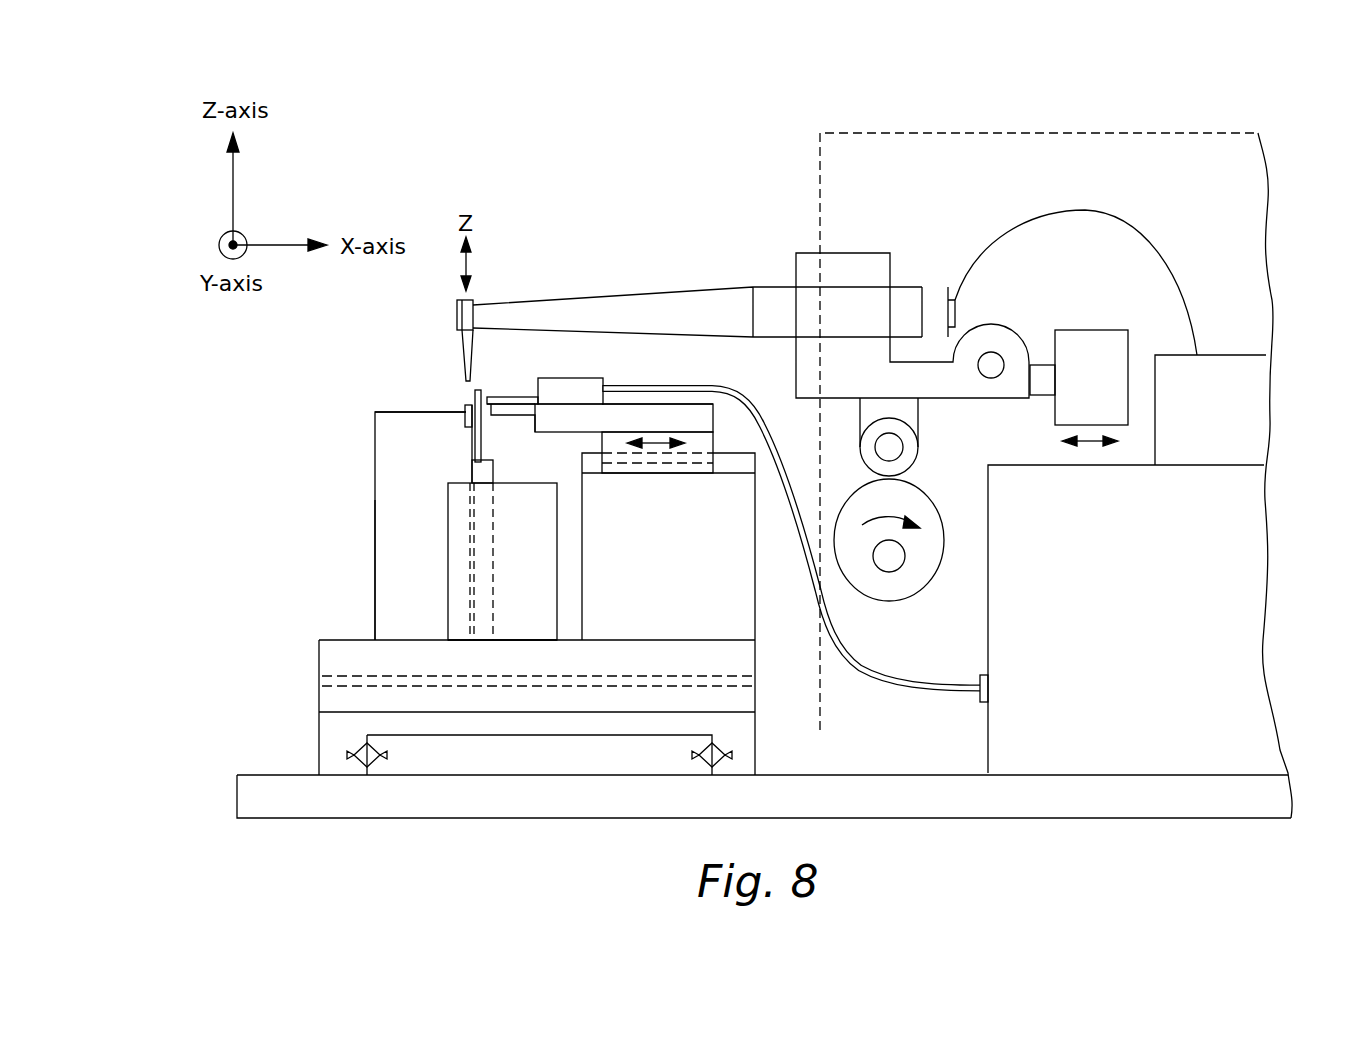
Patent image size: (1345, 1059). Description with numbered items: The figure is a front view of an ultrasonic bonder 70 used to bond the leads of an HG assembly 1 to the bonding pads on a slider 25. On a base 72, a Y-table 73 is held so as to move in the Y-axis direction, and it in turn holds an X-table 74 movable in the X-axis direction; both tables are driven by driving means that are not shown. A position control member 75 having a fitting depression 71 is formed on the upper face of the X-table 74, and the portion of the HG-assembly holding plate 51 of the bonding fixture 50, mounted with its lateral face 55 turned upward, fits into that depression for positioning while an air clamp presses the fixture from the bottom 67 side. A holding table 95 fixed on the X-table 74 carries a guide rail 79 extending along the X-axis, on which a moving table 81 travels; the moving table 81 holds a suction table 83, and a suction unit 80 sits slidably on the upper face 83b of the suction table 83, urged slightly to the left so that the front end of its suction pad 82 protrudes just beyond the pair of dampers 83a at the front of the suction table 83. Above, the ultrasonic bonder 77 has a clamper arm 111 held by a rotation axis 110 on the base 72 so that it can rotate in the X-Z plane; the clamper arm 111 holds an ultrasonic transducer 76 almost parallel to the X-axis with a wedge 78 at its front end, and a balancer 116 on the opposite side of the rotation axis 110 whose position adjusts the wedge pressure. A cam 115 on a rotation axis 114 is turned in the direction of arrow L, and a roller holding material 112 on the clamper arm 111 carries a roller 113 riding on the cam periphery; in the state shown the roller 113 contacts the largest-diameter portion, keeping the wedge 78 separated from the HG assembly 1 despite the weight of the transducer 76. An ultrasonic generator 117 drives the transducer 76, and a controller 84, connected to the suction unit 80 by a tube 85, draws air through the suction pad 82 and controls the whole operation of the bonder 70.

The HG assembly 1 is at (474, 447).
The slider 25 is at (466, 405).
The bonding fixture 50 is at (378, 508).
The HG-assembly holding plate 51 is at (480, 475).
The lateral face 55 is at (403, 413).
The bottom 67 is at (378, 548).
The ultrasonic bonder 70 is at (700, 163).
The fitting depression 71 is at (495, 523).
The base 72 is at (283, 800).
The Y-table 73 is at (335, 745).
The X-table 74 is at (365, 668).
The position control member 75 is at (537, 570).
The ultrasonic transducer 76 is at (680, 307).
The ultrasonic bonder 77 is at (886, 134).
The wedge 78 is at (463, 343).
The guide rail 79 is at (765, 457).
The suction unit 80 is at (570, 390).
The moving table 81 is at (705, 440).
The suction pad 82 is at (505, 402).
The suction table 83 is at (702, 418).
The damper 83a is at (505, 415).
The upper face 83b is at (630, 417).
The controller 84 is at (1242, 520).
The tube 85 is at (925, 685).
The holding table 95 is at (735, 598).
The rotation axis 110 is at (995, 352).
The clamper arm 111 is at (860, 268).
The roller holding material 112 is at (910, 410).
The roller 113 is at (910, 447).
The rotation axis 114 is at (890, 563).
The cam 115 is at (935, 527).
The balancer 116 is at (1087, 350).
The ultrasonic generator 117 is at (1205, 368).